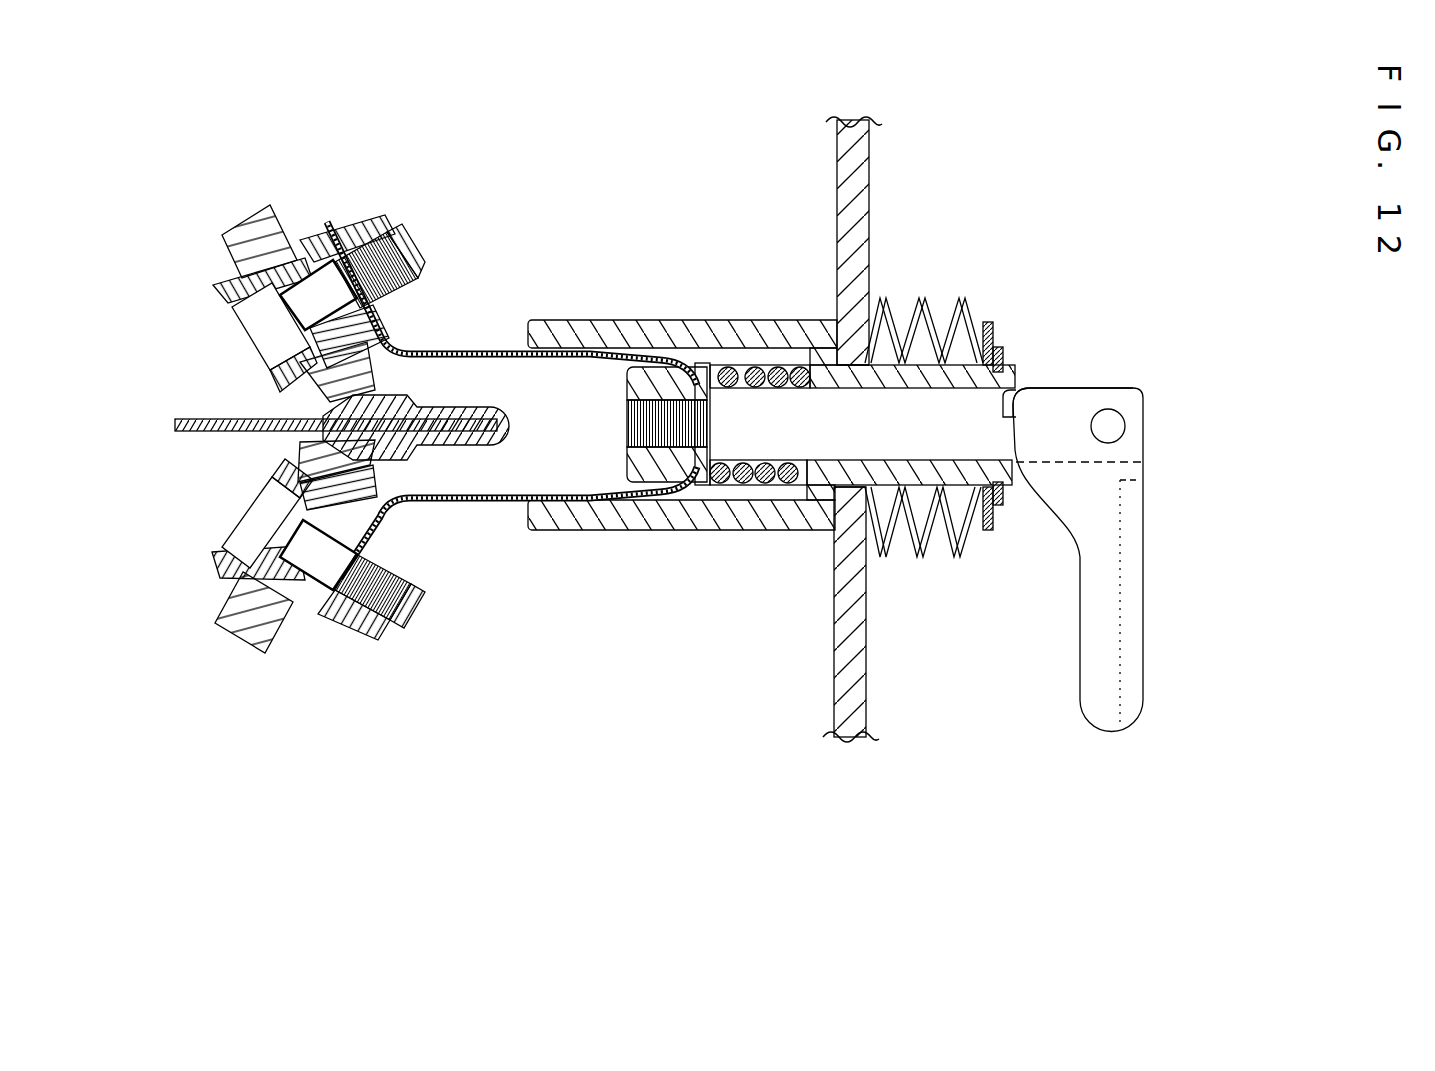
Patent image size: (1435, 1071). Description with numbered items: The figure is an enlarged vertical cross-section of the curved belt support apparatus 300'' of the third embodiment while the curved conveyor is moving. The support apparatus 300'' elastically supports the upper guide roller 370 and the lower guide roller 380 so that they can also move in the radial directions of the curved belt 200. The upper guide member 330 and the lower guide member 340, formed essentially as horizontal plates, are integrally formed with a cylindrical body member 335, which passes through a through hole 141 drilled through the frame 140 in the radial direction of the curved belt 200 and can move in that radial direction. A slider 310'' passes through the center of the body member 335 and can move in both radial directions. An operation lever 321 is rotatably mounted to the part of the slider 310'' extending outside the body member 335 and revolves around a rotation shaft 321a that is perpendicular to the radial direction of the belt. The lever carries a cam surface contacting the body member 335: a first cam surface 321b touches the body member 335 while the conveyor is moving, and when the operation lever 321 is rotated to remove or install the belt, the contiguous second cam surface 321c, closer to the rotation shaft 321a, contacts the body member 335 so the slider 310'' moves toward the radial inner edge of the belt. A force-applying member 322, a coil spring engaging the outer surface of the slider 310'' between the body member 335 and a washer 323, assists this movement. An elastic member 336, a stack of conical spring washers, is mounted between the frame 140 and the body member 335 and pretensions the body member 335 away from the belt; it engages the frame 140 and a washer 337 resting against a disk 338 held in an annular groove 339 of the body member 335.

The curved belt 200 is at (211, 437).
The curved belt support apparatus 300'' is at (777, 424).
The slider 310'' is at (855, 340).
The operation lever 321 is at (1115, 491).
The rotation shaft 321a is at (1112, 426).
The first cam surface 321b is at (1022, 397).
The second cam surface 321c is at (1098, 389).
The force-applying member 322 is at (738, 477).
The washer 323 is at (693, 483).
The upper guide member 330 is at (575, 320).
The body member 335 is at (893, 478).
The elastic member 336 is at (926, 298).
The washer 337 is at (989, 322).
The disk 338 is at (1002, 348).
The annular groove 339 is at (988, 532).
The lower guide member 340 is at (570, 518).
The upper guide roller 370 is at (247, 230).
The lower guide roller 380 is at (257, 636).
The frame 140 is at (874, 655).
The through hole 141 is at (835, 510).